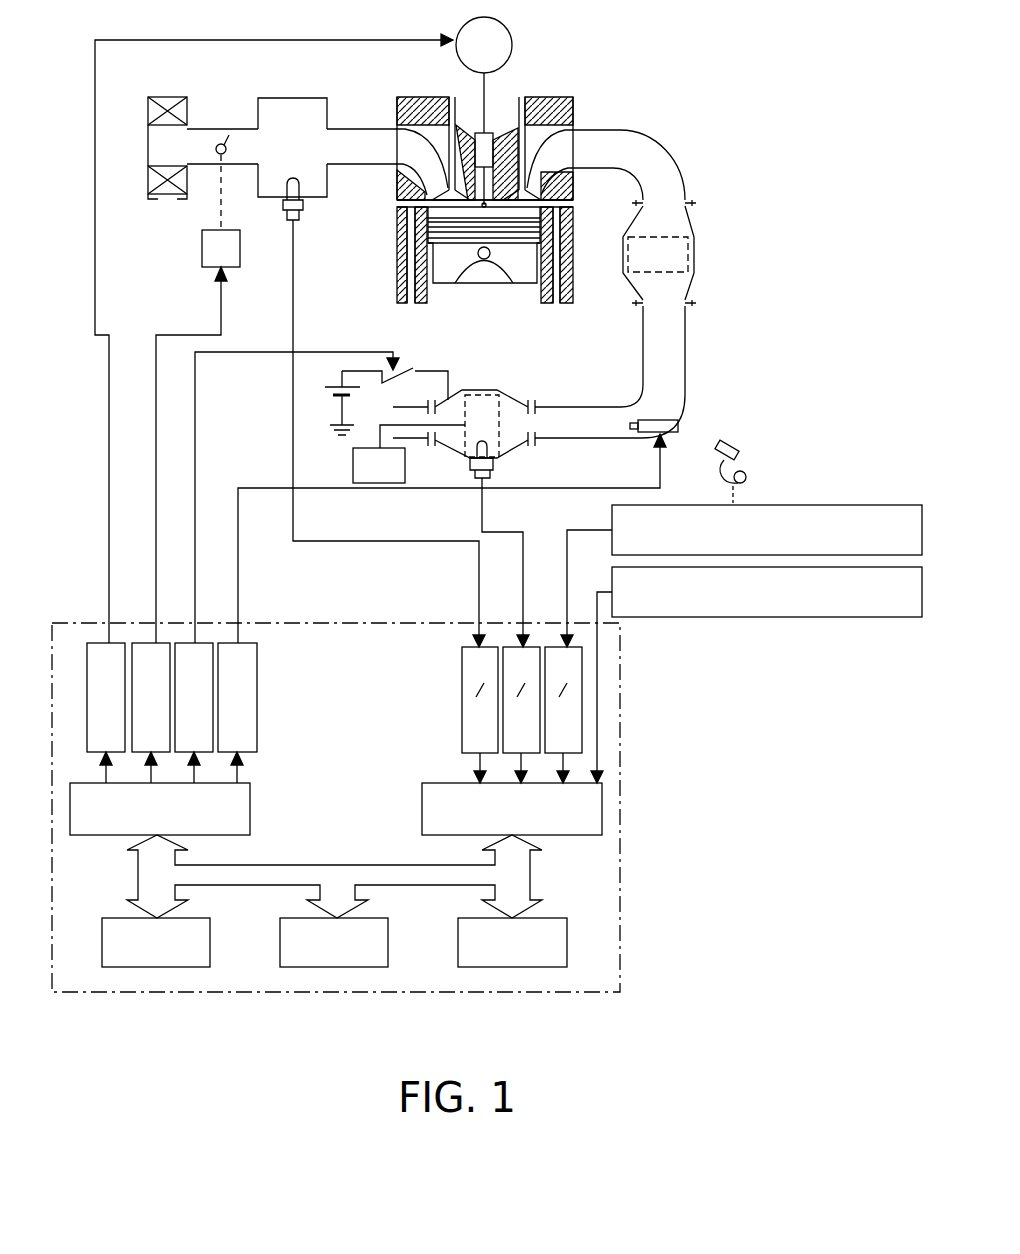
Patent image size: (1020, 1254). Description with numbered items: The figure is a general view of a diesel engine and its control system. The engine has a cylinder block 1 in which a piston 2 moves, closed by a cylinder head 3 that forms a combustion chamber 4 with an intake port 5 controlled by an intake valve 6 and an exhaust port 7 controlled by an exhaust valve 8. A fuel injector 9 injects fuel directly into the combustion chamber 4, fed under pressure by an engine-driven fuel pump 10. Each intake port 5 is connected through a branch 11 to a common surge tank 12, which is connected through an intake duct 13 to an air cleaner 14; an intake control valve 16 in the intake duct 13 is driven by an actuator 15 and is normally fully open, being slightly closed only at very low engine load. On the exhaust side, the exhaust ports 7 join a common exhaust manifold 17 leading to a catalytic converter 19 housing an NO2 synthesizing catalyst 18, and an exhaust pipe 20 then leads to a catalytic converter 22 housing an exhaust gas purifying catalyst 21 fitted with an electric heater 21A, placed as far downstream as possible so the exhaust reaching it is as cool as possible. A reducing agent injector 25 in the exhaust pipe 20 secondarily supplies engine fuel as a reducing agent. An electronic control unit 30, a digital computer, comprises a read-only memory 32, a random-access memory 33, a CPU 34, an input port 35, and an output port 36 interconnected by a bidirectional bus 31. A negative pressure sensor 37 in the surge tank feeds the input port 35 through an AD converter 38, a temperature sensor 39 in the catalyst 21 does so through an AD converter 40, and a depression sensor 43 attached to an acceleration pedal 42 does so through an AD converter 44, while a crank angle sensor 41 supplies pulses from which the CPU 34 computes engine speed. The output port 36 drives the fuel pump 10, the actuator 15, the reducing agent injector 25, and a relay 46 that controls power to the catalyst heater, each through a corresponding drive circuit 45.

The cylinder block 1 is at (397, 245).
The piston 2 is at (522, 283).
The cylinder head 3 is at (400, 100).
The combustion chamber 4 is at (397, 212).
The intake port 5 is at (414, 171).
The intake valve 6 is at (440, 115).
The exhaust port 7 is at (539, 171).
The exhaust valve 8 is at (540, 115).
The fuel injector 9 is at (478, 130).
The fuel pump 10 is at (512, 45).
The branch 11 is at (357, 129).
The surge tank 12 is at (300, 97).
The intake duct 13 is at (239, 129).
The air cleaner 14 is at (168, 97).
The actuator 15 is at (202, 249).
The intake control valve 16 is at (226, 152).
The exhaust manifold 17 is at (620, 130).
The NO2 synthesizing catalyst 18 is at (688, 260).
The catalytic converter 19 is at (694, 222).
The exhaust pipe 20 is at (685, 345).
The exhaust gas purifying catalyst 21 is at (487, 393).
The electric heater 21A is at (361, 478).
The catalytic converter 22 is at (513, 390).
The reducing agent injector 25 is at (678, 420).
The electronic control unit 30 is at (75, 623).
The bidirectional bus 31 is at (337, 878).
The read-only memory 32 is at (210, 957).
The random-access memory 33 is at (388, 957).
The CPU 34 is at (567, 957).
The input port 35 is at (422, 805).
The output port 36 is at (250, 805).
The negative pressure sensor 37 is at (298, 215).
The AD converter 38 is at (460, 700).
The temperature sensor 39 is at (493, 472).
The AD converter 40 is at (500, 645).
The crank angle sensor 41 is at (718, 617).
The acceleration pedal 42 is at (745, 470).
The depression sensor 43 is at (820, 505).
The AD converter 44 is at (548, 645).
The drive circuit 45 is at (225, 643).
The relay 46 is at (386, 381).